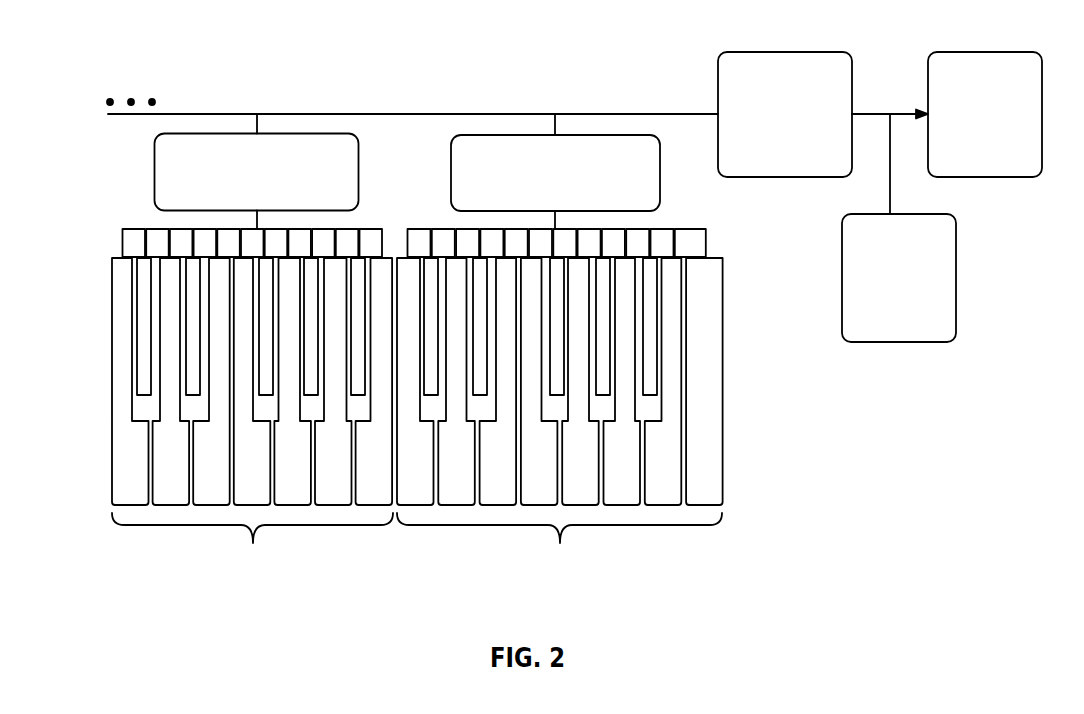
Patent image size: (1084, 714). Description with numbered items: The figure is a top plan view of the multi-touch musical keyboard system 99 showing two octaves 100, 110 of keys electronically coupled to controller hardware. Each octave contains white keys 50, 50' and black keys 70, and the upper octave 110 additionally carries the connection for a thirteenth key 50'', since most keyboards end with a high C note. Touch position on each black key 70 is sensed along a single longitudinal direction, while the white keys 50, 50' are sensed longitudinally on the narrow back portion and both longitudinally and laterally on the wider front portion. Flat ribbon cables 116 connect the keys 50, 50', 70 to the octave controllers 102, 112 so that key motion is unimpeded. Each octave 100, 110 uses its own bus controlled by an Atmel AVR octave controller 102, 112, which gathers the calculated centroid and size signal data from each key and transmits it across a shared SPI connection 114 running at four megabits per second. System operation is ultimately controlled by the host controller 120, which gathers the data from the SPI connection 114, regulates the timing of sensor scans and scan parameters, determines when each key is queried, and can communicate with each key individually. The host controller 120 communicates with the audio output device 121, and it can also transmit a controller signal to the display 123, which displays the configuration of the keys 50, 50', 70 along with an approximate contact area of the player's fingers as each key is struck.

The multi-touch musical keyboard system 99 is at (749, 268).
The octave 100 is at (416, 396).
The octave 110 is at (597, 402).
The key 50 is at (416, 381).
The key 50' is at (420, 381).
The 13th key 50'' is at (742, 381).
The key 70 is at (137, 307).
The flat ribbon cables 116 is at (123, 245).
The octave controller 102 is at (154, 172).
The octave controller 112 is at (451, 172).
The SPI connection 114 is at (438, 113).
The host controller 120 is at (812, 52).
The audio output device 121 is at (997, 52).
The display 123 is at (921, 214).